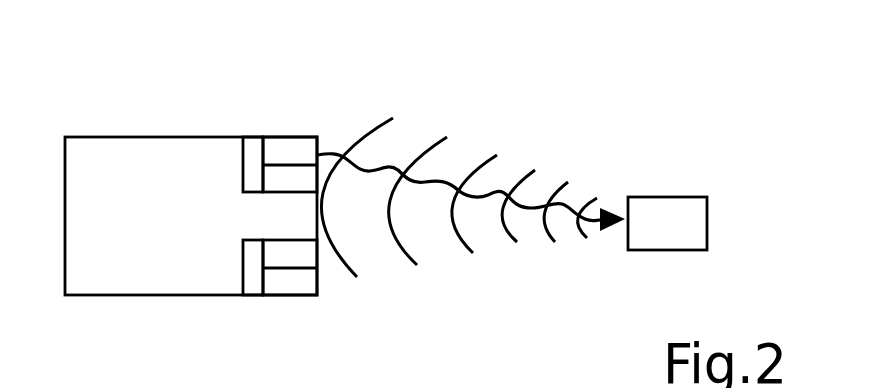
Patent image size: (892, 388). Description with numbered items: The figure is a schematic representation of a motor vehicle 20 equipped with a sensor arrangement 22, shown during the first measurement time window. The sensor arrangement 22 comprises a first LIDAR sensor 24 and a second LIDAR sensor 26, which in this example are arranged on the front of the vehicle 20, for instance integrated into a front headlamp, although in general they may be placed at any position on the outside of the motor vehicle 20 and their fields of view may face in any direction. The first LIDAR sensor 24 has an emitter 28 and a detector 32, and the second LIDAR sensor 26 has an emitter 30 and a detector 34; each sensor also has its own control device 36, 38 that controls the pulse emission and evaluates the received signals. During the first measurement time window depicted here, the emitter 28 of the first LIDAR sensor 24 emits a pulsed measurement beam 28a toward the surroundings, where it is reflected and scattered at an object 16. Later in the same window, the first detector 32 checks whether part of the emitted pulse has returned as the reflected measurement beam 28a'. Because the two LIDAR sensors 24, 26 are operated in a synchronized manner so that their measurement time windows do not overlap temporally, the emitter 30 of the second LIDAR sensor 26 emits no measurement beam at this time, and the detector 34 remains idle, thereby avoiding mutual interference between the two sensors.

The object 16 is at (663, 218).
The motor vehicle 20 is at (148, 119).
The sensor arrangement 22 is at (239, 119).
The first LIDAR sensor 24 is at (285, 118).
The second LIDAR sensor 26 is at (260, 310).
The emitter 28 is at (308, 145).
The measurement beam 28a is at (471, 174).
The reflected measurement beam 28a' is at (525, 222).
The emitter 30 is at (287, 280).
The detector 32 is at (287, 182).
The detector 34 is at (280, 252).
The control device 36 is at (250, 163).
The control device 38 is at (250, 252).